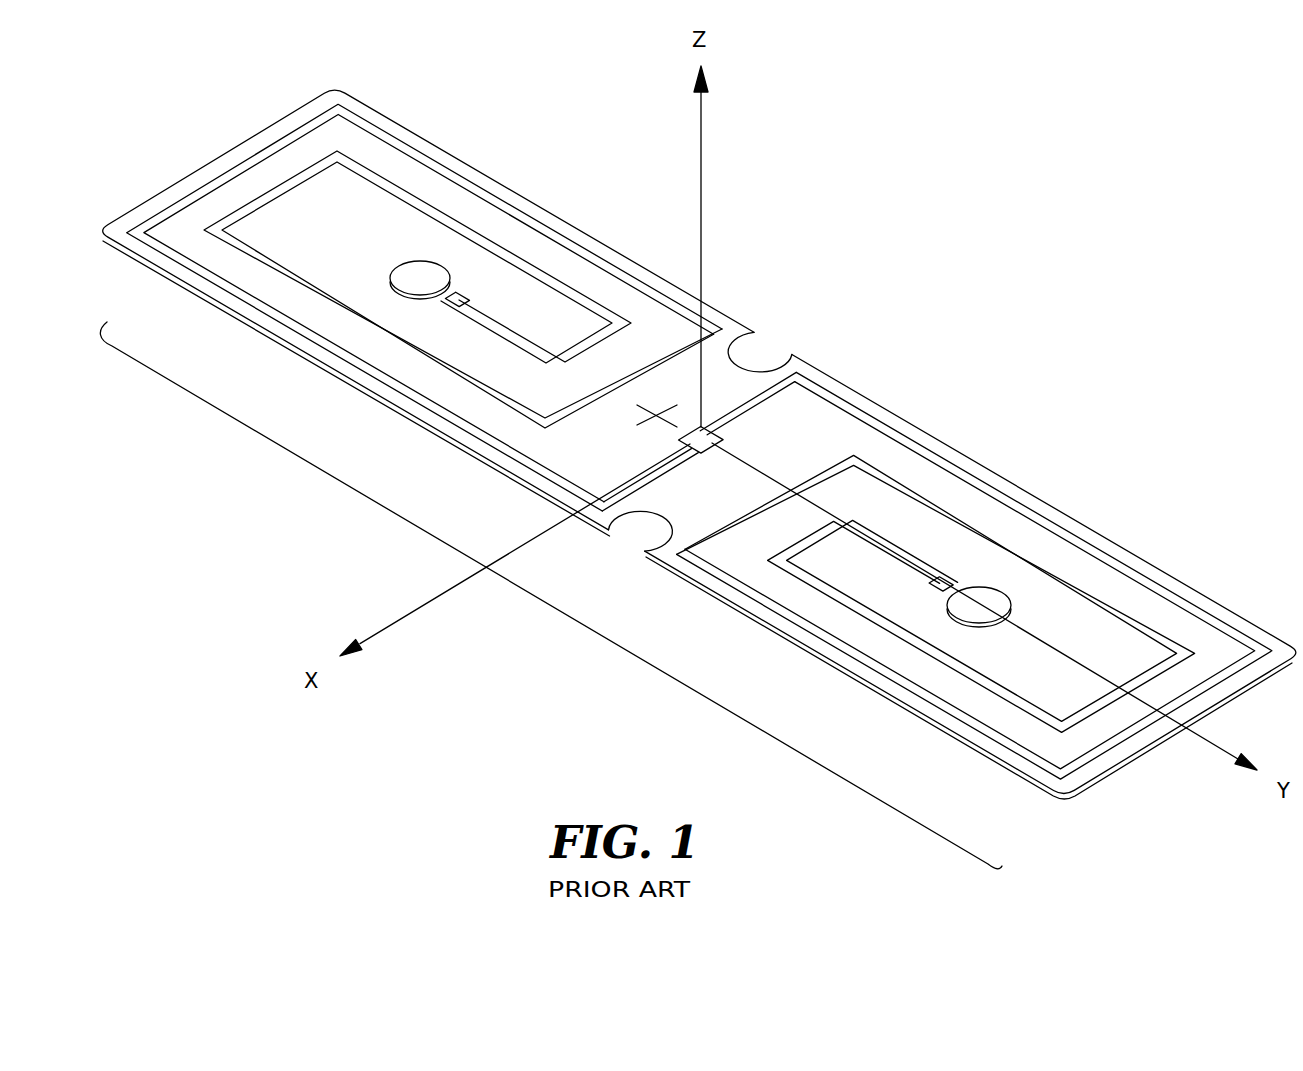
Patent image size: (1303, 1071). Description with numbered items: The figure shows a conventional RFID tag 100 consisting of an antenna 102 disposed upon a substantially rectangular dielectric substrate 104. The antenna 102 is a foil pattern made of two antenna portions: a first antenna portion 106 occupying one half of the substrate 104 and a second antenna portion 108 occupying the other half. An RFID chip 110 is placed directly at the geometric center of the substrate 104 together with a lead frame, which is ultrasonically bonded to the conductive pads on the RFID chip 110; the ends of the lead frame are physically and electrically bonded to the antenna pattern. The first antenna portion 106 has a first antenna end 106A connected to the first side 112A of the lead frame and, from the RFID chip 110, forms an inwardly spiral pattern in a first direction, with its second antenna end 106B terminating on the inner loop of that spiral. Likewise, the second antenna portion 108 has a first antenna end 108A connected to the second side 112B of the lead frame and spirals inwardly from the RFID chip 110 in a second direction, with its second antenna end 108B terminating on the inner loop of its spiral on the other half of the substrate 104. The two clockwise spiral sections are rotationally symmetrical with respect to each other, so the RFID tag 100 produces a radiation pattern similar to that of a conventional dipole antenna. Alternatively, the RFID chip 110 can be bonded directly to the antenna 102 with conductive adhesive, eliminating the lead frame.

The RFID tag 100 is at (1036, 198).
The antenna 102 is at (580, 628).
The substrate 104 is at (1120, 640).
The first antenna portion 106 is at (1090, 540).
The first antenna end 106A is at (768, 402).
The second antenna end 106B is at (905, 556).
The second antenna portion 108 is at (405, 142).
The first antenna end 108A is at (655, 494).
The second antenna end 108B is at (478, 300).
The RFID chip 110 is at (703, 452).
The first side of lead frame 112A is at (706, 425).
The second side of lead frame 112B is at (690, 447).